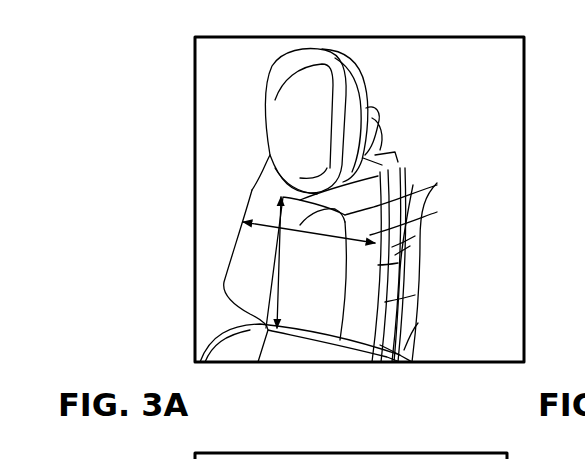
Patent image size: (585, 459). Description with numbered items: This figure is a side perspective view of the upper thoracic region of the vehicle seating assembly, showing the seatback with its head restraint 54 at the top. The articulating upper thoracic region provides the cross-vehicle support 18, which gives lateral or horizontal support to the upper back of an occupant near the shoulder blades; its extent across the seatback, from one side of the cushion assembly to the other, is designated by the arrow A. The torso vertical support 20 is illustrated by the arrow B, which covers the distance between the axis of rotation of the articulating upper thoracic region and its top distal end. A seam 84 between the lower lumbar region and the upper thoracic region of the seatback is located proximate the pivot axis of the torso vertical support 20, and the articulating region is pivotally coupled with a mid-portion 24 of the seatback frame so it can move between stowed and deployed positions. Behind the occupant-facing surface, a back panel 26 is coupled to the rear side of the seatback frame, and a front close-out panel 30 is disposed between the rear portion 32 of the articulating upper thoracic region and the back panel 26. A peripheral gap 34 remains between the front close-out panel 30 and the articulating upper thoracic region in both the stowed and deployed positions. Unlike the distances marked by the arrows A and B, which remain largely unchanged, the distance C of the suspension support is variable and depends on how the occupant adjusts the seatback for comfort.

The head restraint 54 is at (285, 100).
The torso vertical support 20 is at (394, 205).
The seam 84 is at (298, 340).
The mid-portion 24 is at (408, 362).
The rear portion 32 is at (392, 247).
The peripheral gap 34 is at (395, 255).
The cross-vehicle support 18 is at (378, 265).
The front close-out panel 30 is at (385, 302).
The back panel 26 is at (418, 323).
The arrow A is at (420, 197).
The arrow B is at (280, 240).
The distance C is at (292, 190).